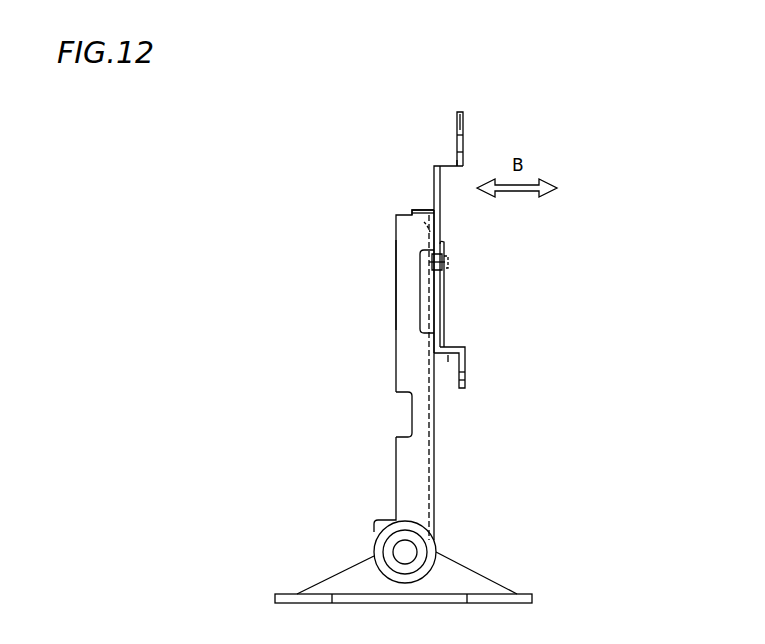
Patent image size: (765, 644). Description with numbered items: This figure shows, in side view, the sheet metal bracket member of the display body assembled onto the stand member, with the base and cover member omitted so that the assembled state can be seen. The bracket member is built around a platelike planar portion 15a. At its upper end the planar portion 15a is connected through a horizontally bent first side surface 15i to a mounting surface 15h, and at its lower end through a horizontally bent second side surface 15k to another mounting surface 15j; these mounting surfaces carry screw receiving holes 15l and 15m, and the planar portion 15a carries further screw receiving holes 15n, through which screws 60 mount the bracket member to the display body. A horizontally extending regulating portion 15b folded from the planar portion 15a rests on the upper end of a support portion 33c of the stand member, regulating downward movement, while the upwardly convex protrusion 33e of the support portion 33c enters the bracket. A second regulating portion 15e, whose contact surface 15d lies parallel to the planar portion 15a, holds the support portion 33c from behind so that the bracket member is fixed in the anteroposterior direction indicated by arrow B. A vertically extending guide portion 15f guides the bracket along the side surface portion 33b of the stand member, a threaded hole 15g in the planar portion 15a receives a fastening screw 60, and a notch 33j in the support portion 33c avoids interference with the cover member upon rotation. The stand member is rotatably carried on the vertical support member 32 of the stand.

The vertical support member 32 is at (342, 572).
The side surface portion 33b is at (396, 282).
The support portion 33c is at (410, 358).
The protrusion 33e is at (428, 211).
The notch 33j is at (411, 408).
The screw 60 is at (428, 262).
The planar portion 15a is at (436, 187).
The regulating portion 15b is at (418, 213).
The contact surface 15d is at (420, 219).
The regulating portion 15e is at (420, 300).
The guide portion 15f is at (448, 262).
The threaded hole 15g is at (456, 140).
The mounting surface 15h is at (439, 162).
The first side surface 15i is at (466, 353).
The mounting surface 15j is at (447, 357).
The second side surface 15k is at (464, 125).
The screw receiving hole 15l is at (467, 373).
The screw receiving hole 15m is at (436, 198).
The screw receiving hole 15n is at (445, 330).